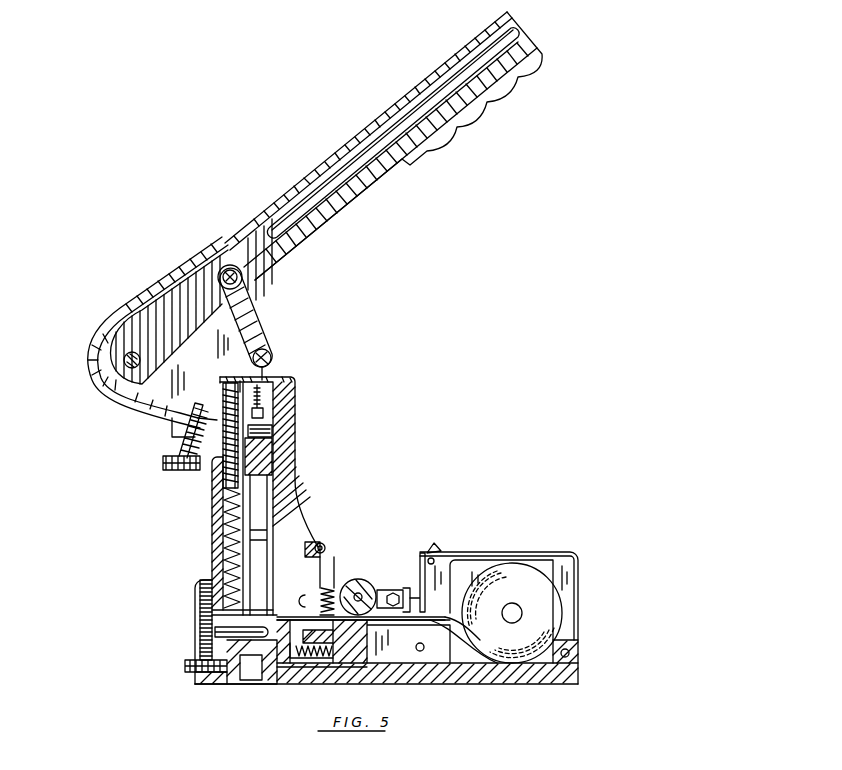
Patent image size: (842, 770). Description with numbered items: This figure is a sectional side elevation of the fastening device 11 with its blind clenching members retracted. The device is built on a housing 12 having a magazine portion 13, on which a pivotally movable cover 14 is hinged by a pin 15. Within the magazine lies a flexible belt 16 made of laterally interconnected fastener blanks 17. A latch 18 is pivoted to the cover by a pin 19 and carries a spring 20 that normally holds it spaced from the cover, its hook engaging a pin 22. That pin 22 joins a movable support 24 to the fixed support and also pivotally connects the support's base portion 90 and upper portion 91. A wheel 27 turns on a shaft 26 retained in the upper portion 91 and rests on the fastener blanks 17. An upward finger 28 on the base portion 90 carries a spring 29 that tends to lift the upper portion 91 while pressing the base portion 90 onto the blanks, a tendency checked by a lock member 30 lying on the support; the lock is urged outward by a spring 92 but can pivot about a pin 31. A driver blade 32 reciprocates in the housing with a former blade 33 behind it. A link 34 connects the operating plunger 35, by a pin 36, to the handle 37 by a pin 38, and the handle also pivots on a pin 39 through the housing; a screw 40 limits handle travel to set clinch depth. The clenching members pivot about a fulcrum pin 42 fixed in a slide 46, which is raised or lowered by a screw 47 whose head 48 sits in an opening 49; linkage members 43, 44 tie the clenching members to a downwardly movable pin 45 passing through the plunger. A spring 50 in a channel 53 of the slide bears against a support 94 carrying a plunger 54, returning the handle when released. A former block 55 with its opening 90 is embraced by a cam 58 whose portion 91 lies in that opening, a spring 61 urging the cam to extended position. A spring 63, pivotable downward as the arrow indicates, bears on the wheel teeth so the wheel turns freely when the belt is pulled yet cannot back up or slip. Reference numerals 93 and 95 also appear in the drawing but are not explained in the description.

The fastening device 11 is at (230, 330).
The housing 12 is at (90, 350).
The magazine portion 13 is at (553, 678).
The cover 14 is at (579, 553).
The pin 15 is at (570, 653).
The flexible belt 16 is at (540, 592).
The fastener blanks 17 is at (553, 638).
The latch 18 is at (428, 556).
The pin 19 is at (433, 560).
The spring 20 is at (423, 580).
The pin 22 is at (415, 575).
The movable support 24 is at (388, 618).
The shaft 26 is at (368, 588).
The wheel 27 is at (362, 582).
The finger 28 is at (331, 585).
The spring 29 is at (336, 596).
The lock member 30 is at (325, 550).
The pin 31 is at (300, 542).
The driver blade 32 is at (296, 383).
The former blade 33 is at (277, 407).
The link 34 is at (253, 303).
The operating plunger 35 is at (280, 373).
The pin 36 is at (270, 357).
The handle 37 is at (335, 166).
The pin 38 is at (218, 270).
The pin 39 is at (124, 364).
The screw 40 is at (163, 462).
The fulcrum pin 42 is at (215, 632).
The linkage member 43 is at (253, 495).
The linkage member 44 is at (272, 455).
The pin 45 is at (272, 428).
The slide 46 is at (242, 668).
The screw 47 is at (205, 643).
The head 48 is at (190, 667).
The opening 49 is at (232, 670).
The spring 50 is at (218, 533).
The channel 53 is at (227, 550).
The plunger 54 is at (228, 480).
The former block 55 is at (363, 655).
The cam 58 is at (285, 670).
The spring 61 is at (326, 660).
The spring 63 is at (388, 607).
The base portion 90 is at (330, 624).
The upper portion 91 is at (393, 594).
The spring 92 is at (322, 548).
The cap 93 is at (137, 303).
The support 94 is at (227, 378).
The direction arrow 95 is at (408, 650).